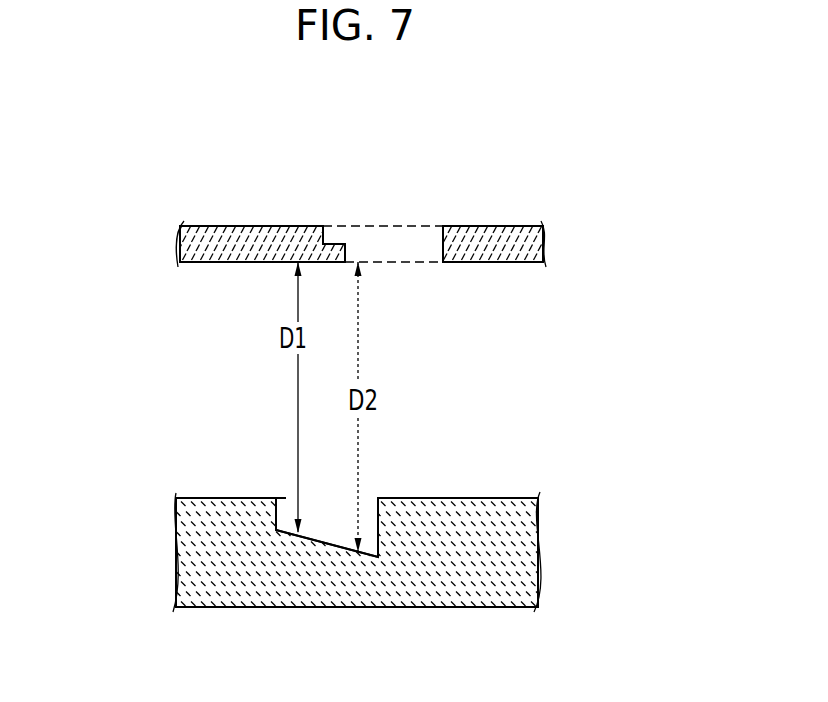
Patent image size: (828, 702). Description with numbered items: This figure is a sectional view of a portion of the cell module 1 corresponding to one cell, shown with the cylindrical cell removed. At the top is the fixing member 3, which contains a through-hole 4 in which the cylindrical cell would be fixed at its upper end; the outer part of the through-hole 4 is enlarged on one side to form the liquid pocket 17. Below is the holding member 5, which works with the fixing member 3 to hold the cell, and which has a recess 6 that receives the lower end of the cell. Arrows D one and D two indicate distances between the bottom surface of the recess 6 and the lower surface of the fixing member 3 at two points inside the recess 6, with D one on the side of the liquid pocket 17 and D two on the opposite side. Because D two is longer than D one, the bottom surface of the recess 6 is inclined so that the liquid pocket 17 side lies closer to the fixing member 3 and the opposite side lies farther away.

The cell module 1 is at (303, 175).
The fixing member 3 is at (500, 226).
The through-hole 4 is at (390, 204).
The holding member 5 is at (357, 523).
The recess 6 is at (330, 540).
The liquid pocket 17 is at (331, 240).